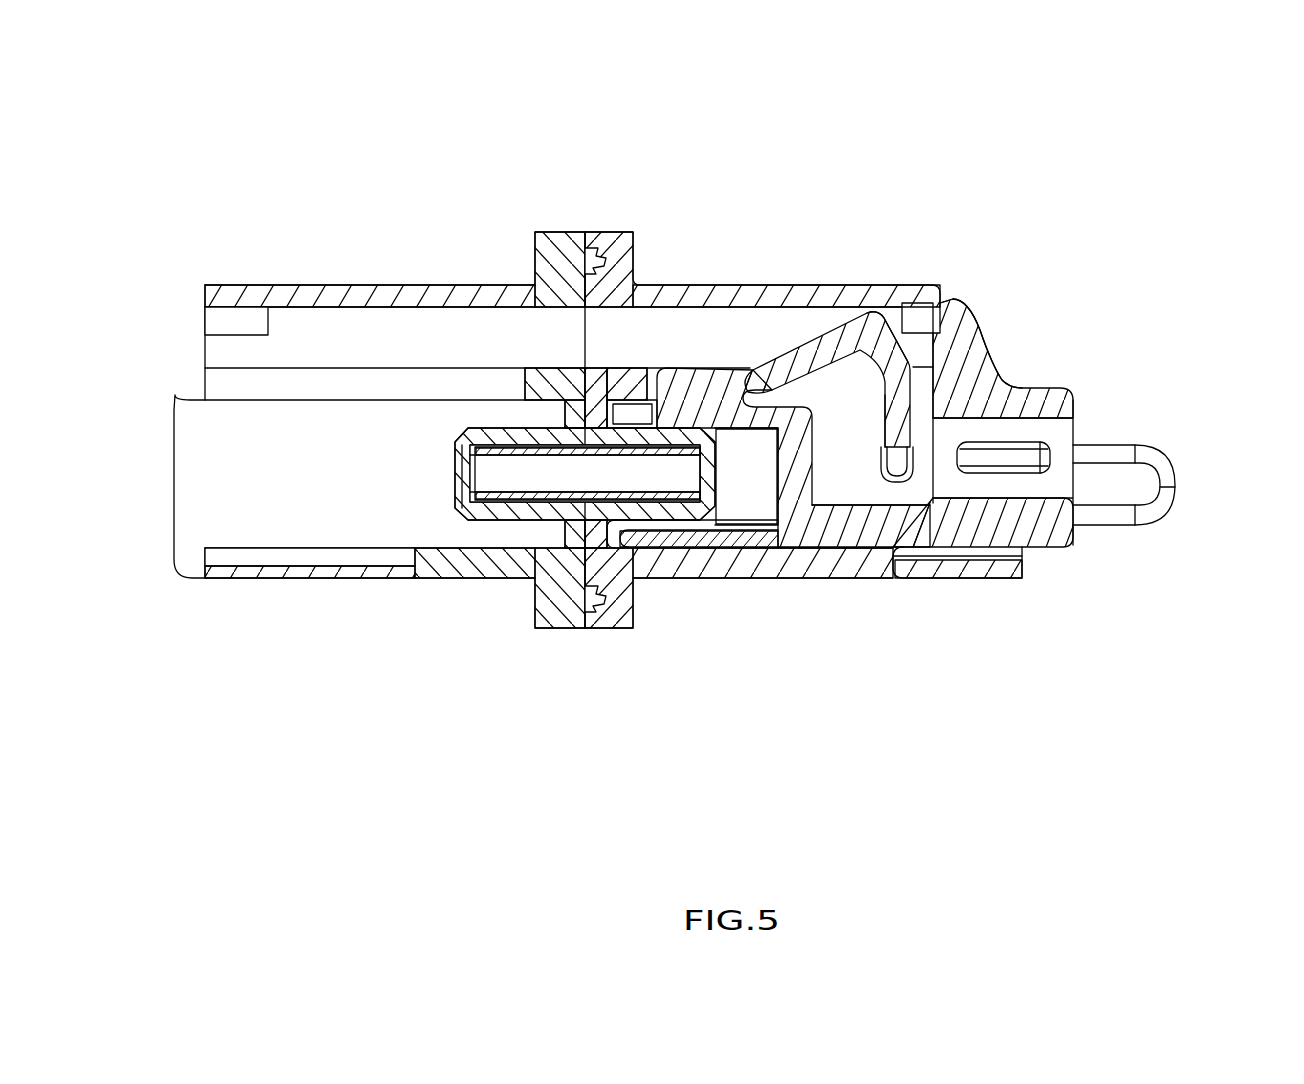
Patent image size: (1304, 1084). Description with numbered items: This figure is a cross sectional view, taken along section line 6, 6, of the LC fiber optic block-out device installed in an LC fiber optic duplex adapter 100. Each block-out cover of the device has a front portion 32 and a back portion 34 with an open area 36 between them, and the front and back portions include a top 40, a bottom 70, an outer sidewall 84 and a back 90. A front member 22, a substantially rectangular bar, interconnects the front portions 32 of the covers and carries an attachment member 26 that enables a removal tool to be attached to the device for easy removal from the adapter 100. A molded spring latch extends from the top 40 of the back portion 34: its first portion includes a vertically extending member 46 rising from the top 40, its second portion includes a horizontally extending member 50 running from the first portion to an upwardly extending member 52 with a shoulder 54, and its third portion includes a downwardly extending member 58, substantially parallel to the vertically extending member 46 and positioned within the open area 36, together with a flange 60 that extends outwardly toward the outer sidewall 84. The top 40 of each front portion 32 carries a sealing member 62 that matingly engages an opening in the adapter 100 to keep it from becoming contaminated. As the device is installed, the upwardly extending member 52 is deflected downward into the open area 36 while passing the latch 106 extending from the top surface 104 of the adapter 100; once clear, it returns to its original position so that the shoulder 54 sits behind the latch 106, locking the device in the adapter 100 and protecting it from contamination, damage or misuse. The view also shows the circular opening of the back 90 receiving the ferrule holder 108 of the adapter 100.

The section line 6- 6 is at (921, 718).
The front member 22 is at (1073, 400).
The attachment member 26 is at (1173, 452).
The front portion 32 is at (968, 360).
The back portion 34 is at (683, 546).
The open area 36 is at (907, 345).
The top 40 is at (618, 405).
The vertically extending member 46 is at (657, 390).
The horizontally extending member 50 is at (678, 382).
The upwardly extending member 52 is at (812, 340).
The shoulder 54 is at (875, 312).
The downwardly extending member 58 is at (885, 385).
The flange 60 is at (905, 462).
The sealing member 62 is at (995, 382).
The bottom 70 is at (768, 537).
The outer sidewall 84 is at (1032, 488).
The back 90 is at (596, 550).
The LC fiber optic duplex adapter 100 is at (417, 226).
The top surface 104 is at (655, 292).
The latch 106 is at (910, 318).
The ferrule holder 108 is at (512, 493).